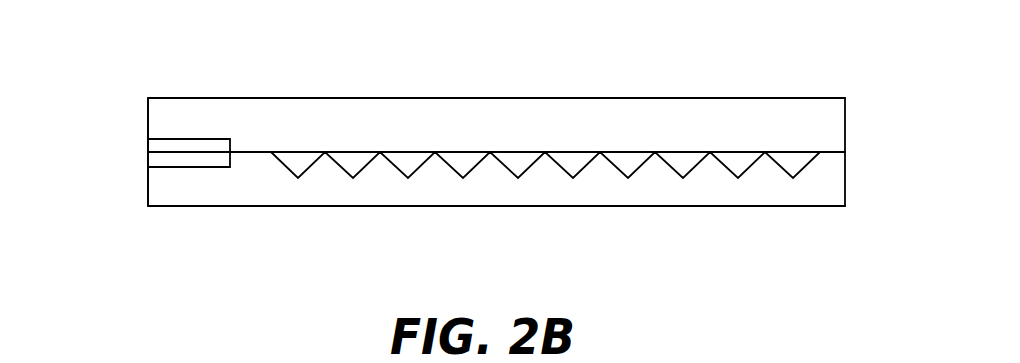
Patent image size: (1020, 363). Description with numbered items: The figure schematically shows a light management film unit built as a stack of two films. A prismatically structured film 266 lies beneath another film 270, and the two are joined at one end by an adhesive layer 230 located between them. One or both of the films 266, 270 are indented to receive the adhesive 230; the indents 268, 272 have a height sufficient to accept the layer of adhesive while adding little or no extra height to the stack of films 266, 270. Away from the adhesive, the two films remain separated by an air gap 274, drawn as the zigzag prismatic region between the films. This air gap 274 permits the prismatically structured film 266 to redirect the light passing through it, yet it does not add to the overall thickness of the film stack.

The adhesive layer 230 is at (148, 153).
The prismatically structured film 266 is at (293, 206).
The indent 268 is at (192, 167).
The film 270 is at (285, 98).
The indent 272 is at (188, 139).
The air gap 274 is at (740, 158).